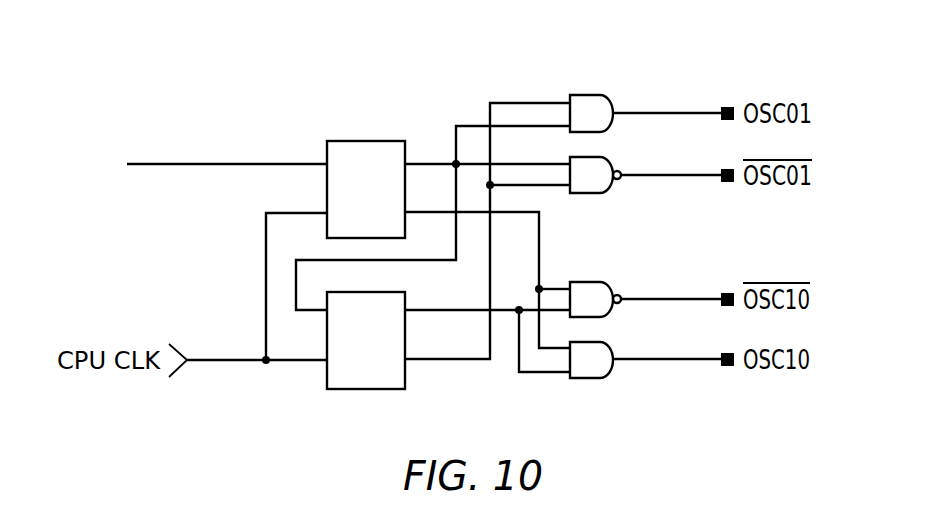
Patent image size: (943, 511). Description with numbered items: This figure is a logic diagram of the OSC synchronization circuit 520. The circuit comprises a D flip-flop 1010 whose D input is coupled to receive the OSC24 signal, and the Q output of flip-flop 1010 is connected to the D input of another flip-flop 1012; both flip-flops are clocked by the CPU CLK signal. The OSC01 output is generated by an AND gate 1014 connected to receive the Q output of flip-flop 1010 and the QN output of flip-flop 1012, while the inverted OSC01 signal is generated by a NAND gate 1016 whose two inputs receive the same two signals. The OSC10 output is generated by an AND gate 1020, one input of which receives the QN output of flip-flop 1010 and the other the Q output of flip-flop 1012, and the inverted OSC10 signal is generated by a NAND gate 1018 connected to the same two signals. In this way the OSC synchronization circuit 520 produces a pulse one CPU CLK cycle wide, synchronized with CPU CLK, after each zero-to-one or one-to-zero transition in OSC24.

The OSC synchronization circuit 520 is at (227, 150).
The D flip-flop 1010 is at (350, 172).
The flip-flop 1012 is at (350, 360).
The AND gate 1014 is at (645, 97).
The NAND gate 1016 is at (645, 188).
The NAND gate 1018 is at (645, 284).
The AND gate 1020 is at (645, 376).